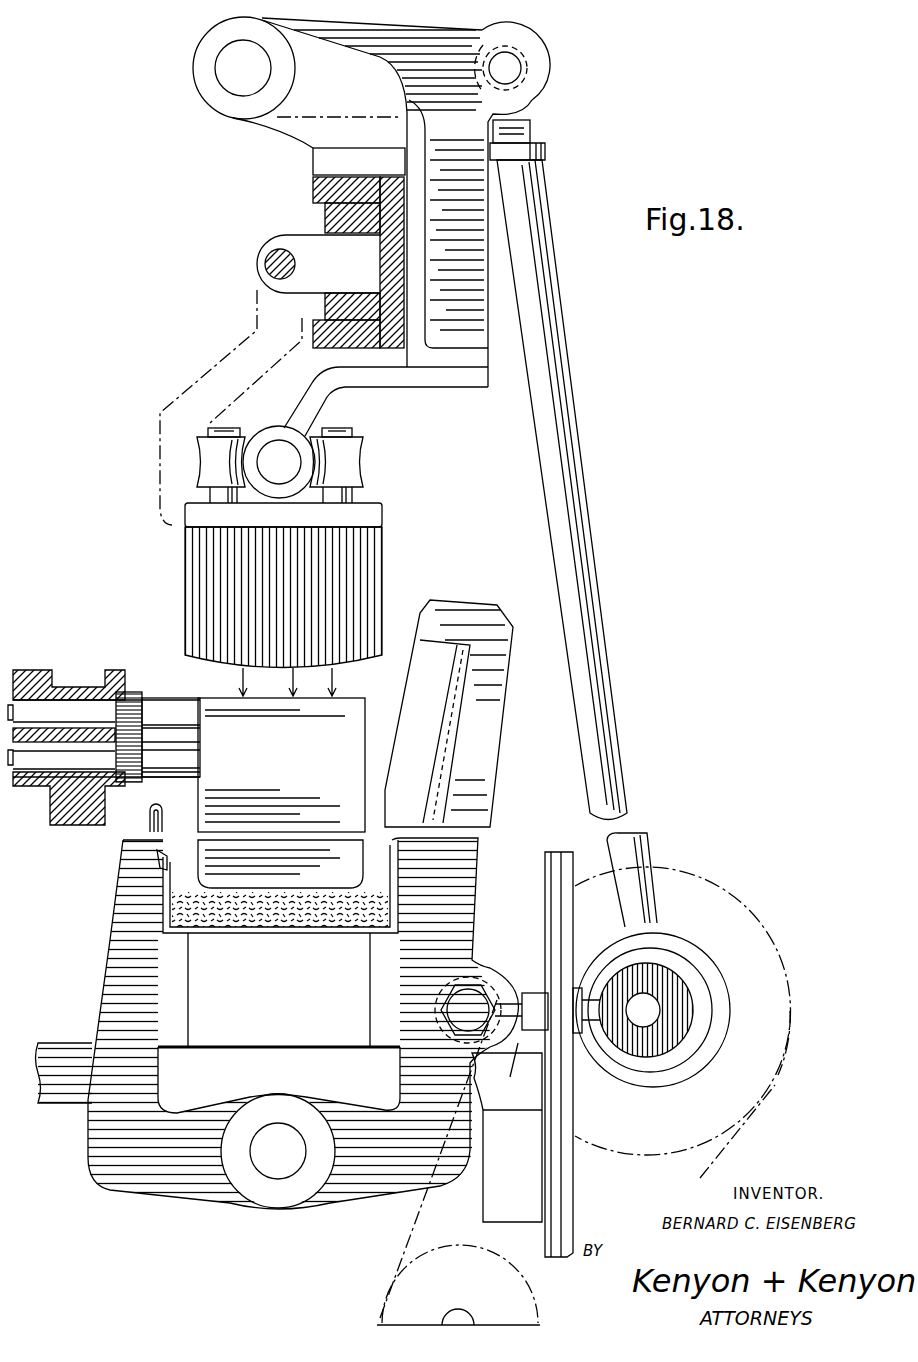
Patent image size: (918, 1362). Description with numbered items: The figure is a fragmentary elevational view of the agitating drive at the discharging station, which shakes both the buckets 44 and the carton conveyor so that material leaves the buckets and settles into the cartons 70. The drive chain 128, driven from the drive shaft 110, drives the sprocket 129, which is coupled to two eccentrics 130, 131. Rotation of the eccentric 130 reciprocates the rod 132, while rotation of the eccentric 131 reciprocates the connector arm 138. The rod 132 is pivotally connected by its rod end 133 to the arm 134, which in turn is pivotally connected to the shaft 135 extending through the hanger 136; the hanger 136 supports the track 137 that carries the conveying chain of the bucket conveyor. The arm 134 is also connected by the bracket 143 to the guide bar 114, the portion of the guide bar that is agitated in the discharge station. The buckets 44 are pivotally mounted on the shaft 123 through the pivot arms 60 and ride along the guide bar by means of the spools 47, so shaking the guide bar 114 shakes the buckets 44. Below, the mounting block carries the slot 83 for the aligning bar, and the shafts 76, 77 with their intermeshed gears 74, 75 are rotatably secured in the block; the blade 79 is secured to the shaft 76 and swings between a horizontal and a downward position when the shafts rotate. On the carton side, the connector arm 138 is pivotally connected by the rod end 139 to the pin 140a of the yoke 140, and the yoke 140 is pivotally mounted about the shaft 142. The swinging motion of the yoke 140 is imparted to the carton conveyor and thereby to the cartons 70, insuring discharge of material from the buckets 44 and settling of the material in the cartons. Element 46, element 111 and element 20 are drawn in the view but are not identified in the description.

The shaft 135 is at (238, 45).
The arm 134 is at (477, 29).
The rod end 133 is at (515, 68).
The hanger 136 is at (370, 97).
The track 137 is at (313, 163).
The bearing sleeve 46 is at (327, 252).
The shaft 123 is at (266, 262).
The pivot arms 60 is at (243, 362).
The bracket 143 is at (312, 407).
The guide bar 114 is at (279, 452).
The spools 47 is at (212, 465).
The buckets 44 is at (200, 574).
The slot 83 is at (88, 683).
The gear 74 is at (128, 697).
The shaft 76 is at (184, 749).
The shaft 77 is at (177, 687).
The gear 75 is at (143, 783).
The blade 79 is at (325, 728).
The cartons 70 is at (165, 888).
The yoke 140 is at (457, 857).
The cavity 111 is at (252, 1022).
The shaft 142 is at (283, 1172).
The bolt 20 is at (465, 1010).
The connector arm 138 is at (557, 995).
The rod end 139 is at (520, 937).
The pin 140a is at (510, 1137).
The eccentric 130 is at (728, 992).
The eccentric 131 is at (678, 967).
The sprocket 129 is at (780, 1051).
The drive chain 128 is at (722, 1150).
The rod 132 is at (580, 616).
The drive shaft 110 is at (380, 1320).